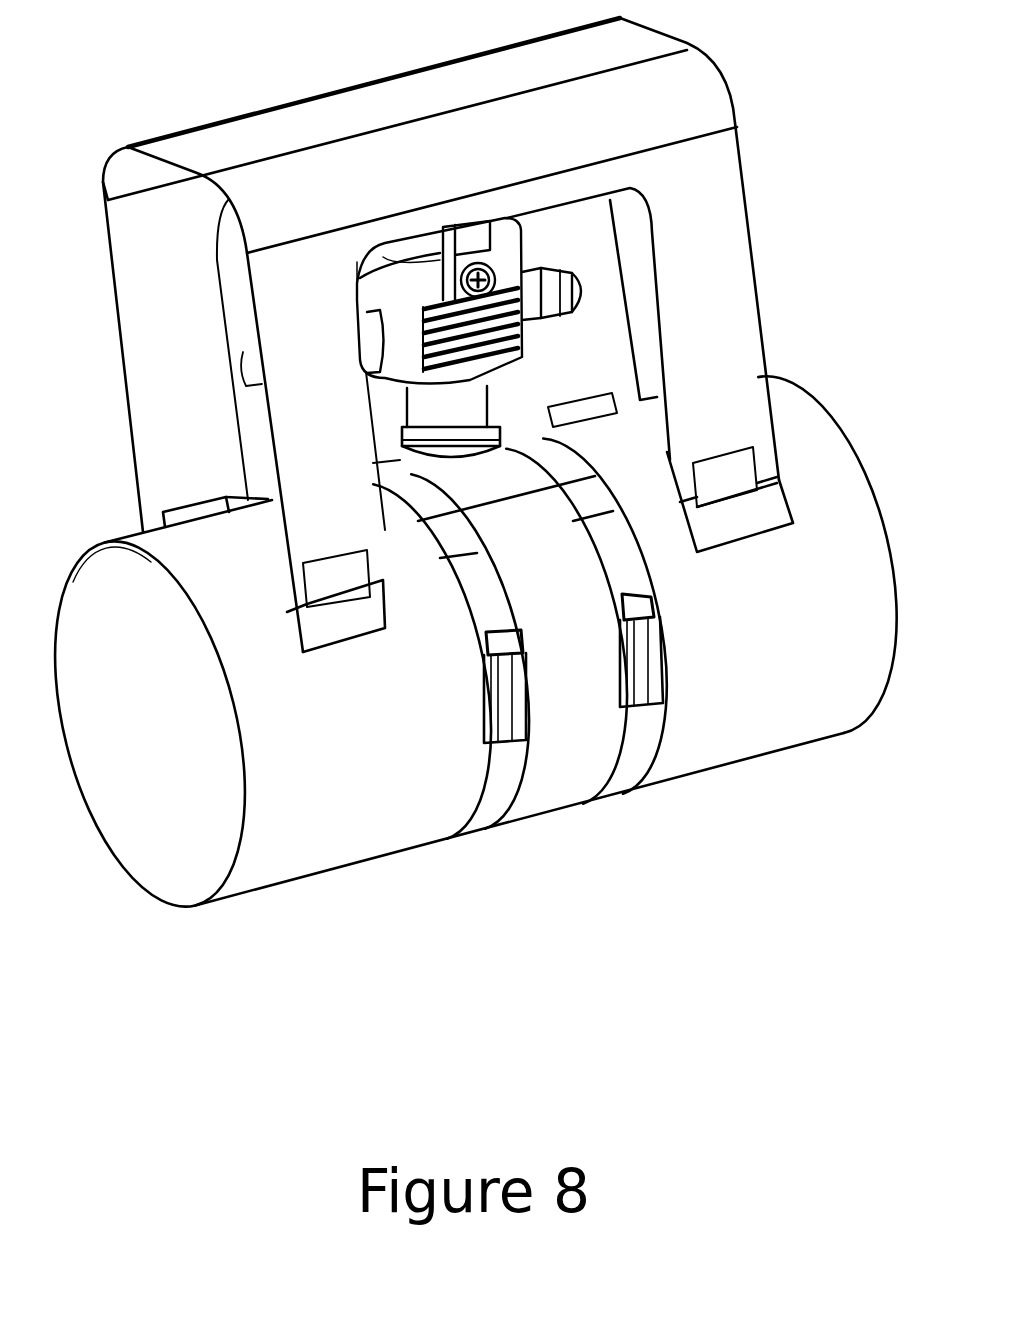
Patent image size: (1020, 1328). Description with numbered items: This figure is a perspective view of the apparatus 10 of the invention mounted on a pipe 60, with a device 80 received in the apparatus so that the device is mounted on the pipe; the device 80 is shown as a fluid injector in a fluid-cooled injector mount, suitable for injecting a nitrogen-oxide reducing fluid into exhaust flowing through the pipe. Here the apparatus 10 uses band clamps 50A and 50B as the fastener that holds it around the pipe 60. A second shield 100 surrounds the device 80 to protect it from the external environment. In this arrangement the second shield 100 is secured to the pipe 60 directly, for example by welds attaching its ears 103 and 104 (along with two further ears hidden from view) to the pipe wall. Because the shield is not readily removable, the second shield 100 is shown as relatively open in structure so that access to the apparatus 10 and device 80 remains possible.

The second shield 100 is at (367, 83).
The device 80 is at (528, 345).
The pipe 60 is at (785, 750).
The apparatus 10 is at (503, 488).
The band clamp 50A is at (500, 768).
The band clamp 50B is at (640, 723).
The ear 103 is at (347, 623).
The ear 104 is at (767, 518).